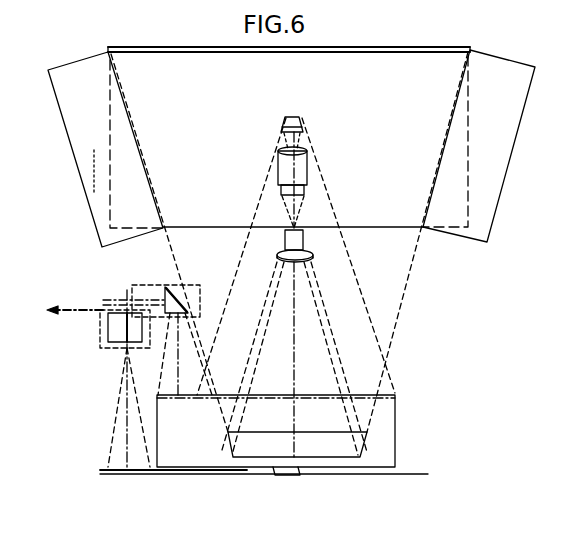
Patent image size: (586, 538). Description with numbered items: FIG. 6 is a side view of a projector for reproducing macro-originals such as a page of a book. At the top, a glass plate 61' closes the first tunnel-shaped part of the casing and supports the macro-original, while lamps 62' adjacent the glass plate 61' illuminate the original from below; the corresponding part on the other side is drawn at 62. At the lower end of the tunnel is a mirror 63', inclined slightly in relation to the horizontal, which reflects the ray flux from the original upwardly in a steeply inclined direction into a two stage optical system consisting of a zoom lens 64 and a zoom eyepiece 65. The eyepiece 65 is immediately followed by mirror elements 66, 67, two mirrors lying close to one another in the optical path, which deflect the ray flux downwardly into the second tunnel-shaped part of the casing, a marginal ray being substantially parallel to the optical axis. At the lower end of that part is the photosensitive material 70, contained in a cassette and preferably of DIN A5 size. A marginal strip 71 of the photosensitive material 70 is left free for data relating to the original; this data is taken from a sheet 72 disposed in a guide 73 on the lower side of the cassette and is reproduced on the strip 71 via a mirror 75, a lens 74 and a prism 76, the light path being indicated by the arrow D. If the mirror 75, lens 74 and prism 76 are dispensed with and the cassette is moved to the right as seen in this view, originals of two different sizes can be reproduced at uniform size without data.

The glass plate 61' is at (289, 31).
The left reflector panel 62 is at (120, 242).
The lamps 62' is at (470, 241).
The mirror 63' is at (297, 475).
The zoom lens 64 is at (304, 343).
The zoom eyepiece 65 is at (303, 163).
The mirror element 66 is at (335, 127).
The mirror element 67 is at (301, 123).
The photosensitive material 70 is at (272, 412).
The marginal strip 71 is at (186, 398).
The sheet 72 is at (118, 469).
The guide 73 is at (275, 476).
The lens 74 is at (108, 332).
The mirror 75 is at (122, 301).
The prism 76 is at (176, 289).
The direction D is at (118, 281).